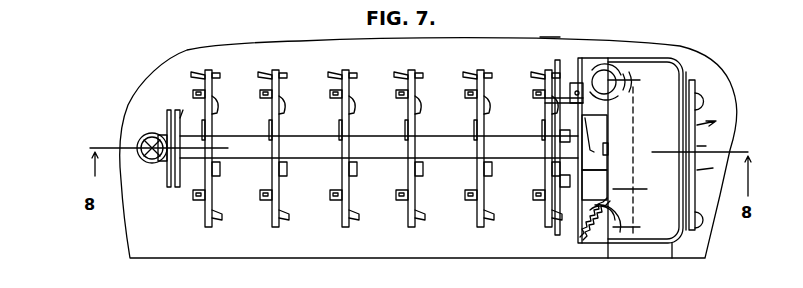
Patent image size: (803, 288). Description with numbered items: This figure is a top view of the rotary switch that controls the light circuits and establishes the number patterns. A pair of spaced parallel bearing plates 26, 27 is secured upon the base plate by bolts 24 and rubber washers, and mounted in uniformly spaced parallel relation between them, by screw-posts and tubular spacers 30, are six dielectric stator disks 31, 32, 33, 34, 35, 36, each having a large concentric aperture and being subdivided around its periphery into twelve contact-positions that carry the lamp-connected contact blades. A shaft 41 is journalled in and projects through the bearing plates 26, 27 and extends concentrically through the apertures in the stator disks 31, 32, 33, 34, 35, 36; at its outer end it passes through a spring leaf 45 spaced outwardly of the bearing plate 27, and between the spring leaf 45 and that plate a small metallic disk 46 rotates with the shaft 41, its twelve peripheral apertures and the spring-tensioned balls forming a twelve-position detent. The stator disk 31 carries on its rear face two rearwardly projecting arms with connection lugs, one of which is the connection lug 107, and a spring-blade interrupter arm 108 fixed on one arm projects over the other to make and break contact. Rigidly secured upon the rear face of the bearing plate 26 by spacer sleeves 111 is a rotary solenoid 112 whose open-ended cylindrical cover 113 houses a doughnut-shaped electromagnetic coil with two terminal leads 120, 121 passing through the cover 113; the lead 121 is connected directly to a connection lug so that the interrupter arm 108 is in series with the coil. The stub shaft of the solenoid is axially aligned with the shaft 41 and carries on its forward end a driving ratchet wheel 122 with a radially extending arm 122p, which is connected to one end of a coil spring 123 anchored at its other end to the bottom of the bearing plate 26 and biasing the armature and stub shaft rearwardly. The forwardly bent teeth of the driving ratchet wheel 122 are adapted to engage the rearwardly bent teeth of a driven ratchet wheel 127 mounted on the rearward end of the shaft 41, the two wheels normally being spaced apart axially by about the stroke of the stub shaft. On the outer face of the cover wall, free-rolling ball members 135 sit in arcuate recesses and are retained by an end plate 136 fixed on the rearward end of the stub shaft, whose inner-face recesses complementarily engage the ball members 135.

The bolts 24 is at (150, 166).
The bearing plate 26 is at (578, 222).
The bearing plate 27 is at (184, 112).
The tubular spacers 30 is at (370, 145).
The stator disk 31 is at (544, 235).
The stator disk 32 is at (476, 235).
The stator disk 33 is at (408, 235).
The stator disk 34 is at (344, 235).
The stator disk 35 is at (272, 234).
The stator disk 36 is at (204, 234).
The shaft 41 is at (558, 138).
The spring leaf 45 is at (165, 190).
The metallic disk 46 is at (176, 188).
The connection lug 107 is at (550, 40).
The interrupter arm 108 is at (574, 82).
The spacer sleeves 111 is at (605, 184).
The rotary solenoid 112 is at (675, 250).
The cylindrical cover 113 is at (660, 62).
The terminal lead 120 is at (706, 127).
The terminal lead 121 is at (710, 172).
The driving ratchet wheel 122 is at (606, 148).
The arm 122p is at (610, 246).
The coil spring 123 is at (586, 242).
The driven ratchet wheel 127 is at (588, 140).
The ball members 135 is at (697, 84).
The end plate 136 is at (702, 146).